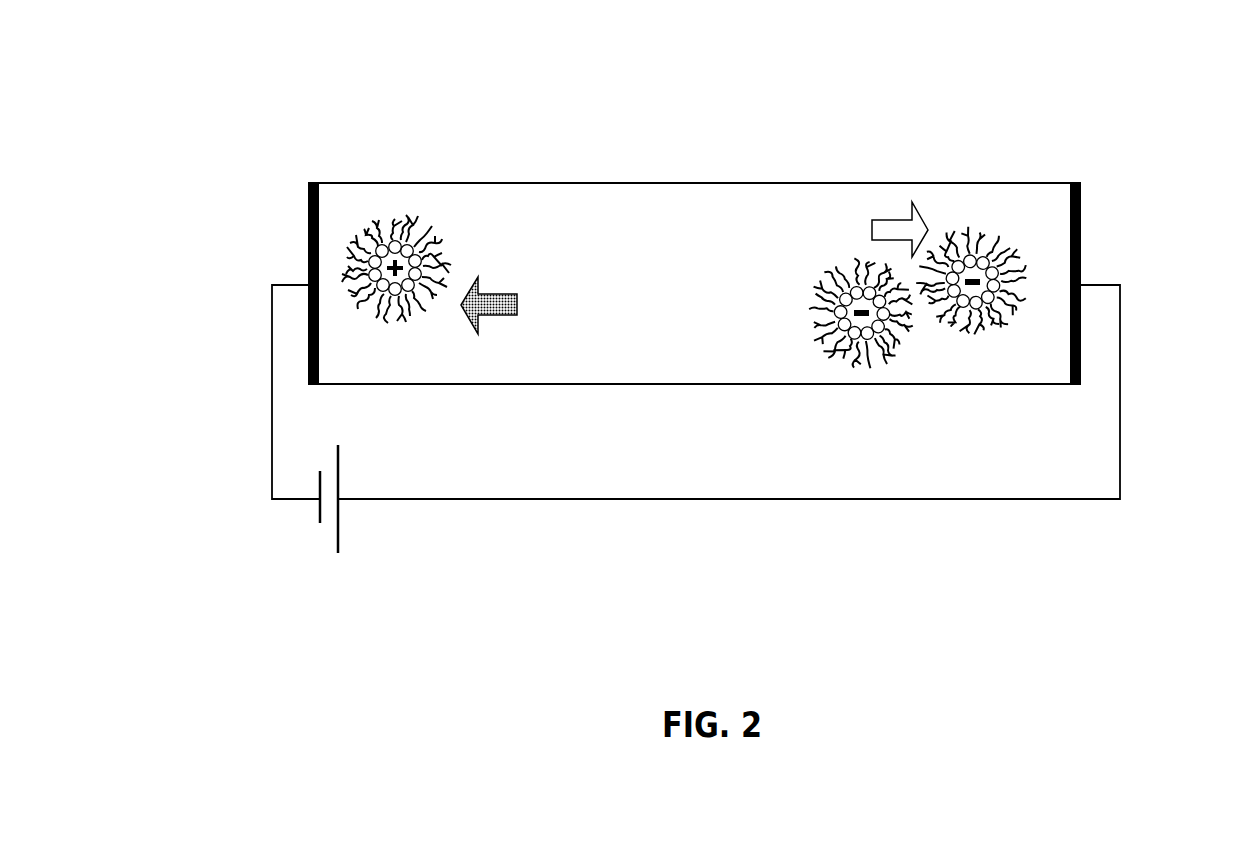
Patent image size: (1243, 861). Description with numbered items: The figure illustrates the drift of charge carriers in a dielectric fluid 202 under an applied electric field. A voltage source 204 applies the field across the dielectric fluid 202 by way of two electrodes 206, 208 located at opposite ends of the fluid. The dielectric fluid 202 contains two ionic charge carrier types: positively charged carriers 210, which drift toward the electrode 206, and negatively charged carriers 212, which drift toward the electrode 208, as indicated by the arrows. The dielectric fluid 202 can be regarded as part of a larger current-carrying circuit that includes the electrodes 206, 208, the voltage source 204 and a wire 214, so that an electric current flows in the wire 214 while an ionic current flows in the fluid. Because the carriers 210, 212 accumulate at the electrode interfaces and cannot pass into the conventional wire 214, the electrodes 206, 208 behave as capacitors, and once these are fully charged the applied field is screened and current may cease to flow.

The dielectric fluid 202 is at (652, 210).
The voltage source 204 is at (346, 532).
The electrode 206 is at (318, 242).
The electrode 208 is at (1080, 244).
The positively charged carriers 210 is at (432, 222).
The negatively charged carriers 212 is at (937, 208).
The wire 214 is at (1120, 430).